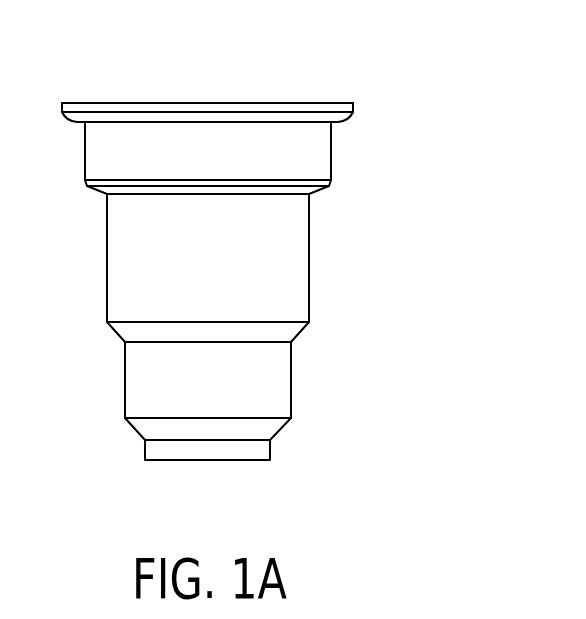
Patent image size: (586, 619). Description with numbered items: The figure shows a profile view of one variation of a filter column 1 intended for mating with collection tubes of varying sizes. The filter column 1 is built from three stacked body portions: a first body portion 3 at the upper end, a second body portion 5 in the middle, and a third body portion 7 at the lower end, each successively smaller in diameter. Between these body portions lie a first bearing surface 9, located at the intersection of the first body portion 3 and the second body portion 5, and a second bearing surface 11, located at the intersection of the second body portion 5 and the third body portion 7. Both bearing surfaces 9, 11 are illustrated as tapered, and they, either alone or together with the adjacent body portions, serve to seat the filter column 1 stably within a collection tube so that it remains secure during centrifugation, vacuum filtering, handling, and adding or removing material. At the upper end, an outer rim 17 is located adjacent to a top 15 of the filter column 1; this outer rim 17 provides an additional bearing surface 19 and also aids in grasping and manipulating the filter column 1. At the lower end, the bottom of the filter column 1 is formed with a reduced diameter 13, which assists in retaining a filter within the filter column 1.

The filter column 1 is at (342, 77).
The first body portion 3 is at (335, 152).
The second body portion 5 is at (312, 250).
The third body portion 7 is at (293, 372).
The first bearing surface 9 is at (98, 187).
The second bearing surface 11 is at (113, 336).
The reduced diameter 13 is at (250, 461).
The top 15 is at (198, 103).
The outer rim 17 is at (112, 103).
The additional bearing surface 19 is at (72, 117).